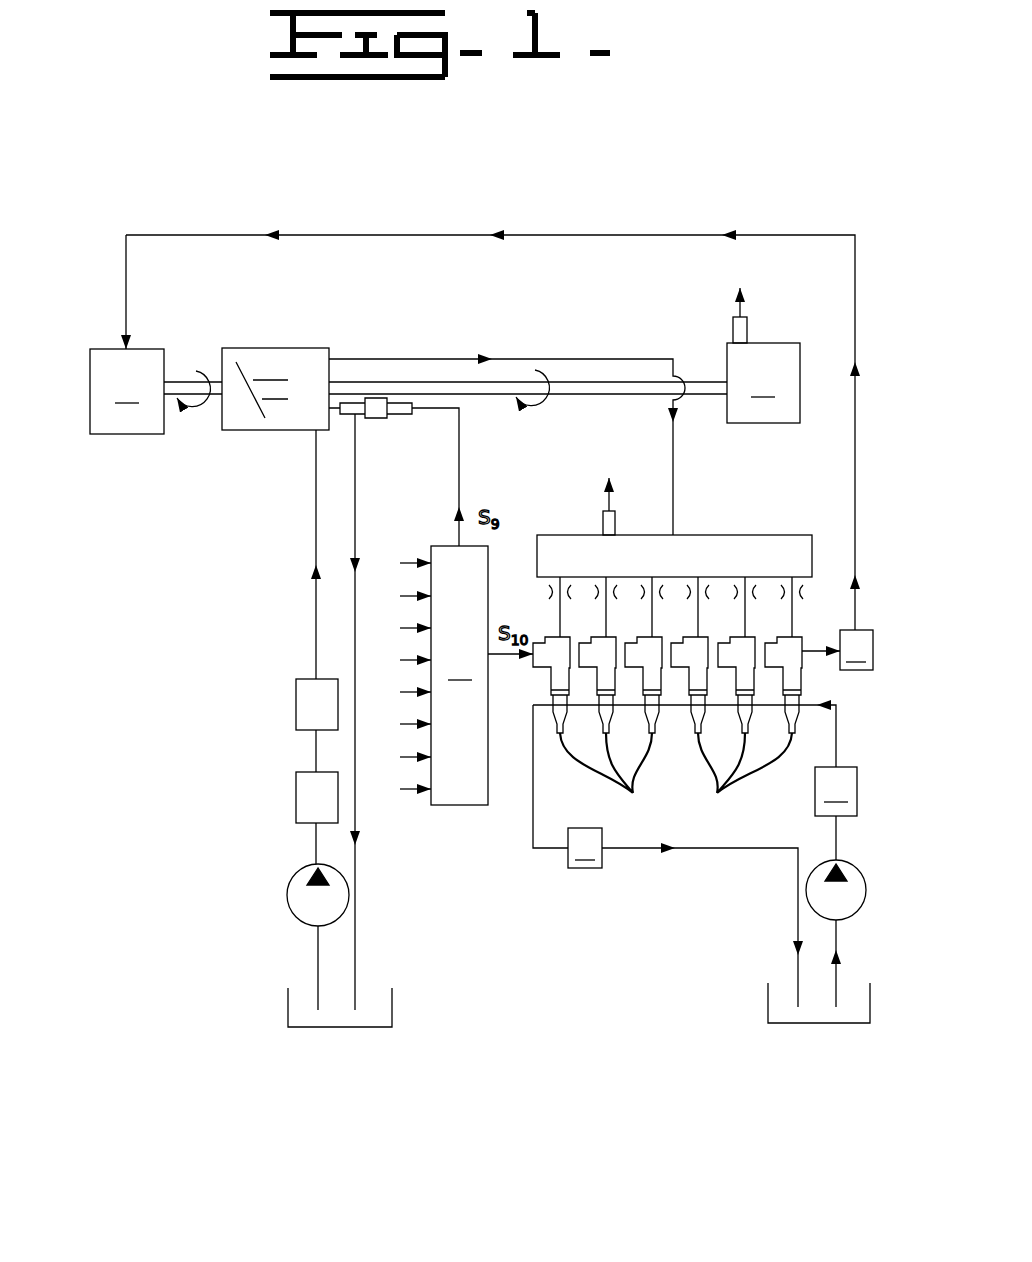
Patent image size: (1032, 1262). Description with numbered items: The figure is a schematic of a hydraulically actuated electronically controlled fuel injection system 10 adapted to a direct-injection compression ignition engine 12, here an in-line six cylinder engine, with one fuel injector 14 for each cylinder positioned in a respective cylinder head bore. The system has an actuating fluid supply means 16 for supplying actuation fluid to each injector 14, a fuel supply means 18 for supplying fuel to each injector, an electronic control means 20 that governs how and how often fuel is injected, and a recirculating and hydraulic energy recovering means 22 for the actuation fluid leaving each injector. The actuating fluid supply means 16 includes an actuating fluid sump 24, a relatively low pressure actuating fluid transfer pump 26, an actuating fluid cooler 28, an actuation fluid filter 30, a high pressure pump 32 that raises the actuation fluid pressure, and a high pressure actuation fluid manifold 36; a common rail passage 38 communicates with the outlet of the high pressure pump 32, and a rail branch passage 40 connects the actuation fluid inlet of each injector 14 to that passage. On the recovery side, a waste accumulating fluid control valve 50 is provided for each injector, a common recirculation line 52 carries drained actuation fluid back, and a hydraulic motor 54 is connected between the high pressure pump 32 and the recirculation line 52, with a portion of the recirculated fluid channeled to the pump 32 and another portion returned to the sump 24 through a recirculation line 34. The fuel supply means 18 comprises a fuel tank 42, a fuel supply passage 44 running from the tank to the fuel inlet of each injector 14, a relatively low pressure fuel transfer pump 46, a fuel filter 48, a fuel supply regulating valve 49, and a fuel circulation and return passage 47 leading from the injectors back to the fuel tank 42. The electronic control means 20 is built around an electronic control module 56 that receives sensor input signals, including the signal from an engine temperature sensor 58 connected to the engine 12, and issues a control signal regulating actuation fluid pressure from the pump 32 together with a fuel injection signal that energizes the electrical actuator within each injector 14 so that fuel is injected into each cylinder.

The fuel injection system 10 is at (643, 184).
The engine 12 is at (763, 383).
The fuel injector 14 is at (668, 691).
The actuating fluid supply means 16 is at (350, 1050).
The fuel supply means 18 is at (822, 1034).
The electronic control means 20 is at (461, 808).
The recirculating and hydraulic energy recovering means 22 is at (103, 222).
The actuating fluid sump 24 is at (392, 1003).
The actuating fluid transfer pump 26 is at (296, 895).
The actuating fluid cooler 28 is at (298, 790).
The actuation fluid filter 30 is at (298, 714).
The high pressure pump 32 is at (265, 432).
The recirculation line 34 is at (360, 893).
The high pressure actuation fluid manifold 36 is at (720, 530).
The common rail passage 38 is at (580, 535).
The rail branch passage 40 is at (795, 612).
The fuel tank 42 is at (768, 1010).
The fuel supply passage 44 is at (836, 730).
The fuel transfer pump 46 is at (865, 872).
The fuel circulation and return passage 47 is at (798, 865).
The fuel filter 48 is at (836, 813).
The fuel supply regulating valve 49 is at (567, 786).
The waste accumulating fluid control valve 50 is at (856, 650).
The common recirculation line 52 is at (346, 235).
The hydraulic motor 54 is at (127, 391).
The electronic control module 56 is at (430, 675).
The engine temperature sensor 58 is at (748, 330).